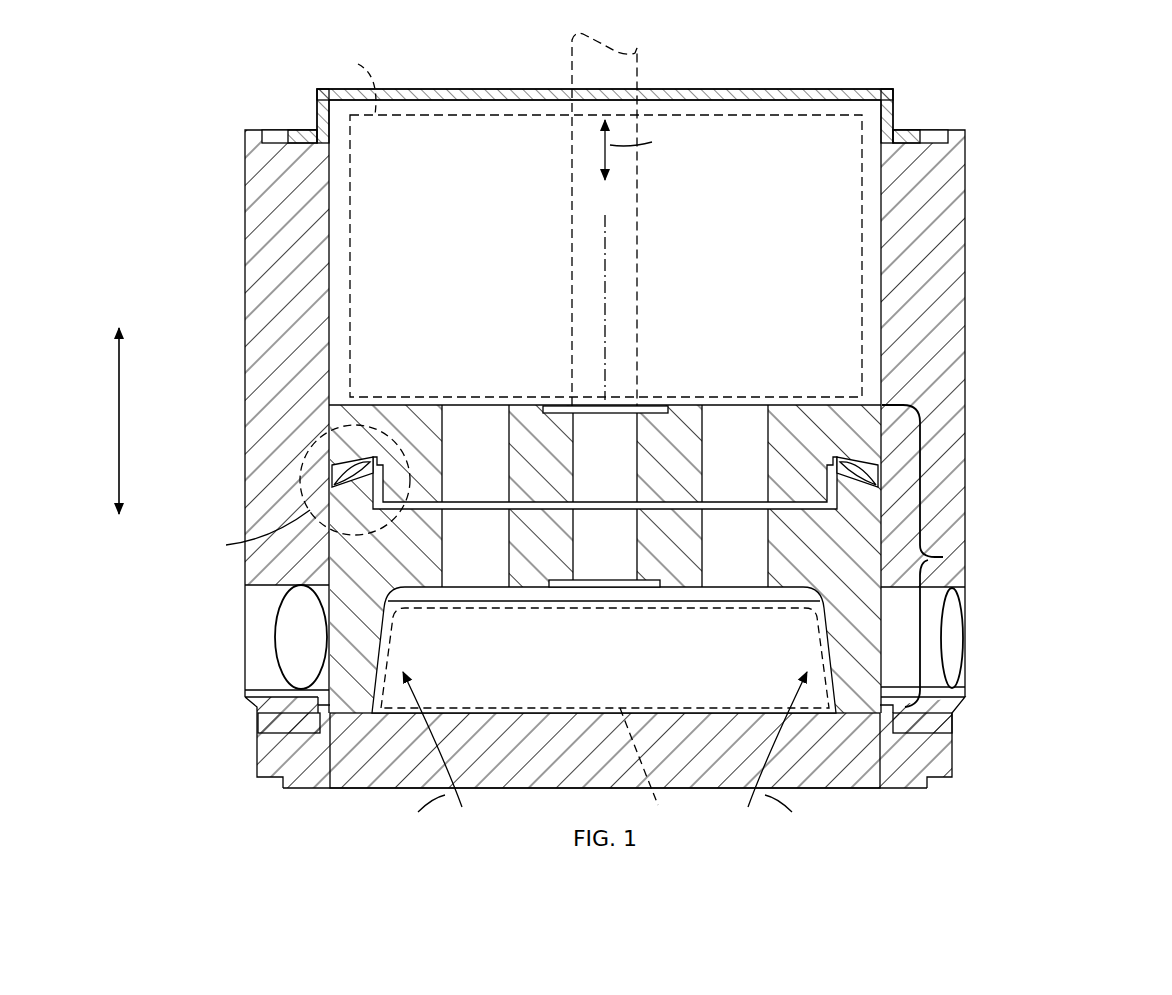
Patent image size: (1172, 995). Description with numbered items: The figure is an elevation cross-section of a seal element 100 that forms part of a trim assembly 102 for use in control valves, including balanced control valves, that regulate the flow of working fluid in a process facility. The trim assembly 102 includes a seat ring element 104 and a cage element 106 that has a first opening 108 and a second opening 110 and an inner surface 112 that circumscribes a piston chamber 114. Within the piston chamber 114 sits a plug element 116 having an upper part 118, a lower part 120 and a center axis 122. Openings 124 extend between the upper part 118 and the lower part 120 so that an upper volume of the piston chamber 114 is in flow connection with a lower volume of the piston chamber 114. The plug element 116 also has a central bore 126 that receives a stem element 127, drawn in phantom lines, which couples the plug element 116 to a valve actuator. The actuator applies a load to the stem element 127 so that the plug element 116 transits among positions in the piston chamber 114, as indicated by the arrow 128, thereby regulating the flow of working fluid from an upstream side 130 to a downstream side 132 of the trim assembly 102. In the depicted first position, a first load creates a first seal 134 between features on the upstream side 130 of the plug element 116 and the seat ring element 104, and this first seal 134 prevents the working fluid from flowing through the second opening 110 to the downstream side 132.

The seal element 100 is at (889, 480).
The trim assembly 102 is at (957, 86).
The seat ring element 104 is at (943, 757).
The cage element 106 is at (966, 183).
The first opening 108 is at (290, 637).
The second opening 110 is at (955, 655).
The inner surface 112 is at (880, 190).
The piston chamber 114 is at (482, 146).
The plug element 116 is at (940, 557).
The upper part 118 is at (656, 306).
The lower part 120 is at (498, 669).
The center axis 122 is at (607, 233).
The openings 124 is at (483, 428).
The central bore 126 is at (607, 438).
The stem element 127 is at (640, 80).
The arrow 128 is at (119, 423).
The upstream side 130 is at (520, 814).
The downstream side 132 is at (1115, 649).
The first seal 134 is at (790, 420).